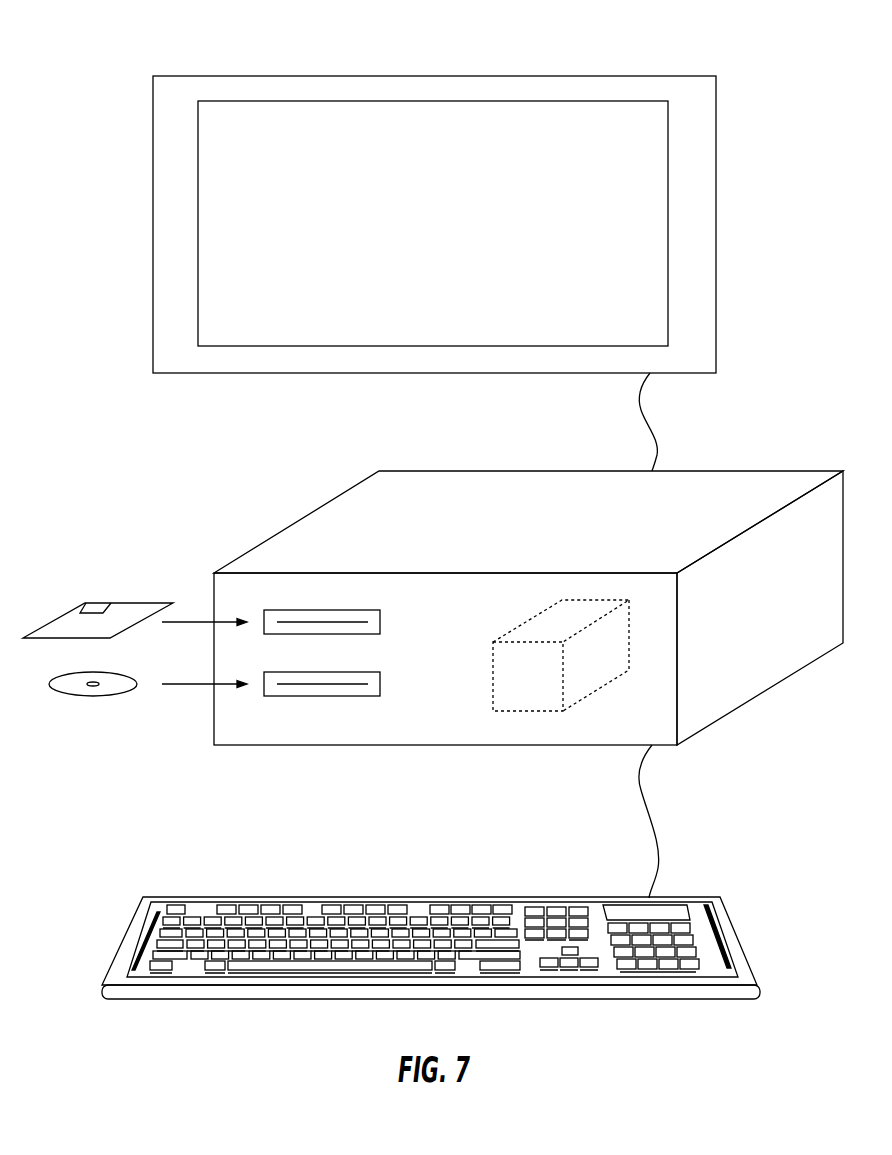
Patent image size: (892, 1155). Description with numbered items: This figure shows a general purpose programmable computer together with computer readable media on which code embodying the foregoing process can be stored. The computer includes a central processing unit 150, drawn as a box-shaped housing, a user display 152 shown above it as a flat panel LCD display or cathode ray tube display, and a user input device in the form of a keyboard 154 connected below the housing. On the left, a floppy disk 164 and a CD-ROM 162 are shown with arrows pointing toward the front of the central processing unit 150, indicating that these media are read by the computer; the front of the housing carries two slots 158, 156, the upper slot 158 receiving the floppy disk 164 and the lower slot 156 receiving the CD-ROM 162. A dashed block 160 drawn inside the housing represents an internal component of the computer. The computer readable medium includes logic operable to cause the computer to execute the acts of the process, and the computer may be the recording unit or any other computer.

The central processing unit 150 is at (773, 471).
The user display 152 is at (653, 76).
The keyboard 154 is at (697, 897).
The optical disc drive 156 is at (343, 672).
The floppy disk drive 158 is at (343, 610).
The processor / memory 160 is at (493, 648).
The CD-ROM 162 is at (127, 675).
The floppy disk 164 is at (128, 603).